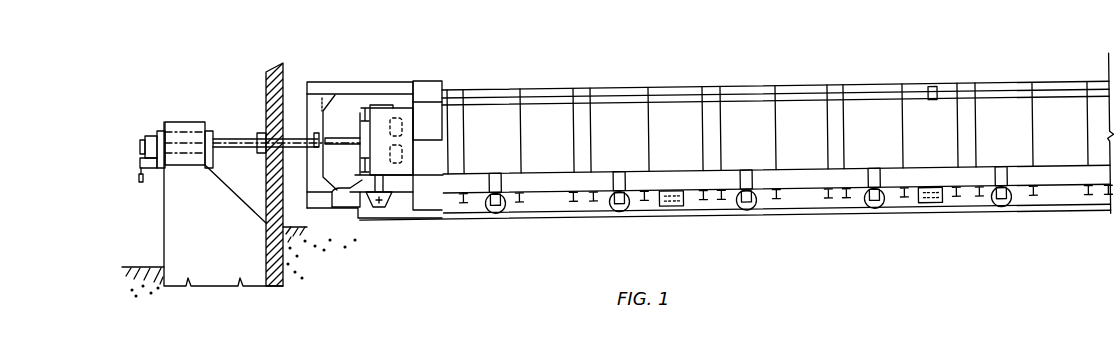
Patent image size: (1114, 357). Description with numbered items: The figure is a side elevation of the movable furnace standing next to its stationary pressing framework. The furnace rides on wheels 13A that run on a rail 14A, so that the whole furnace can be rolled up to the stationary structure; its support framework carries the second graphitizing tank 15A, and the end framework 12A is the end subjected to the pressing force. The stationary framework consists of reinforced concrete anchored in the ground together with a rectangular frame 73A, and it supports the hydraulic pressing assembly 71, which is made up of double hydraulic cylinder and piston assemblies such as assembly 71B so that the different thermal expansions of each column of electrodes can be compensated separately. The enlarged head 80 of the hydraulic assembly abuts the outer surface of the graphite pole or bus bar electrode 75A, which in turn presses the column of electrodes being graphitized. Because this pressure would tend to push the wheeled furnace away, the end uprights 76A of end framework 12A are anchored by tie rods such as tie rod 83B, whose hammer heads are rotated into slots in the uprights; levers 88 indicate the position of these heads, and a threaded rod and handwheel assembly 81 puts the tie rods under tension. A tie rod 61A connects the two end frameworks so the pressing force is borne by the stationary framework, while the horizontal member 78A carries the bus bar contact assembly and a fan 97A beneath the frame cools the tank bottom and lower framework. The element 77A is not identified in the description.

The end framework 12A is at (393, 80).
The wheels 13A is at (872, 205).
The rail 14A is at (552, 215).
The second graphitizing tank 15A is at (992, 82).
The tie rod 61A is at (807, 97).
The hydraulic pressing assembly 71 is at (188, 115).
The hydraulic cylinder and piston assembly 71B is at (232, 135).
The rectangular frame 73A is at (277, 95).
The graphite pole 75A is at (408, 145).
The end uprights 76A is at (316, 118).
The end block 77A is at (432, 95).
The horizontal member 78A is at (360, 88).
The enlarged head 80 is at (350, 158).
The threaded rod and handwheel assembly 81 is at (145, 138).
The tie rod 83B is at (295, 240).
The levers 88 is at (140, 182).
The fan 97A is at (682, 206).